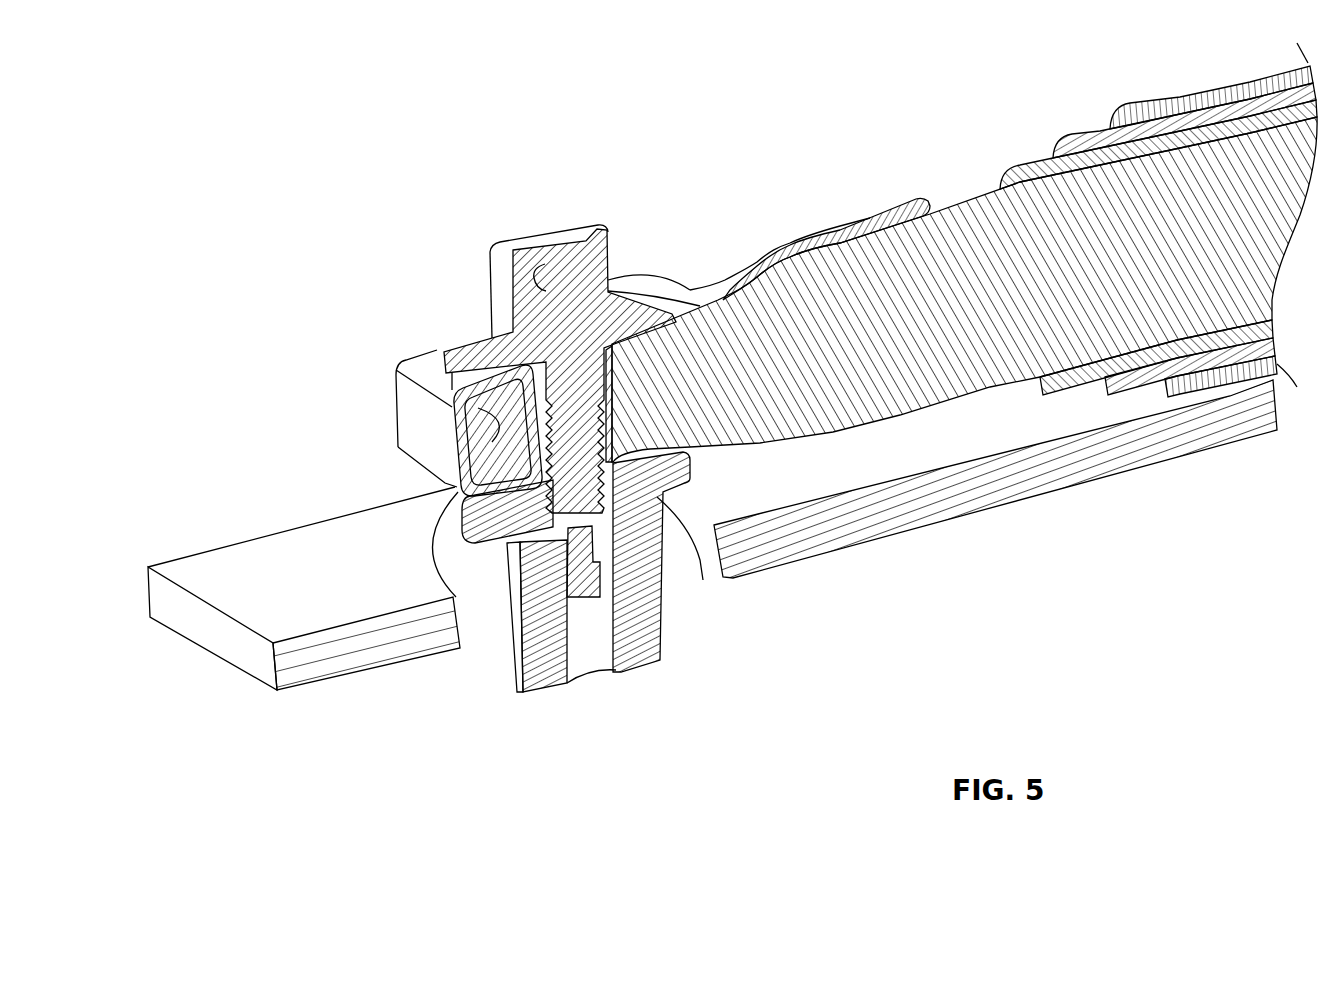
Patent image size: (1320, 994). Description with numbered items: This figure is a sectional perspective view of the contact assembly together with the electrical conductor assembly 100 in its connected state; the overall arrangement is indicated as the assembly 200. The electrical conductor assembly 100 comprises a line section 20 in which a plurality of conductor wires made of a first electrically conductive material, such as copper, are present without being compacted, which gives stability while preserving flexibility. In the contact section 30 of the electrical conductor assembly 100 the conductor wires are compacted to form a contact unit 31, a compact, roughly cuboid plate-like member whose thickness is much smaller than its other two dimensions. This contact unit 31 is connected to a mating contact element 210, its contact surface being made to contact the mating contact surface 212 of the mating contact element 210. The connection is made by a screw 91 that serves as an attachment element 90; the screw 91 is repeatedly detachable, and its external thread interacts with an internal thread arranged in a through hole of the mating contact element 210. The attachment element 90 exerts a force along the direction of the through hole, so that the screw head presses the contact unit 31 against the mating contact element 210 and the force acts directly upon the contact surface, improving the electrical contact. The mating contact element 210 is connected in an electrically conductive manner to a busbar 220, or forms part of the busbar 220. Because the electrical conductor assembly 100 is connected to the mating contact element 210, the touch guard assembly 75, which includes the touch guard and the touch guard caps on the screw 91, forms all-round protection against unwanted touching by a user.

The fastening assembly 200 is at (211, 143).
The electrical conductor assembly 100 is at (529, 214).
The touch guard assembly 75 is at (688, 297).
The attachment element 90 is at (543, 290).
The line section 20 is at (960, 300).
The contact unit 31 is at (452, 407).
The contact section 30 is at (464, 445).
The busbar 220 is at (287, 556).
The mating contact element 210 is at (520, 620).
The mating contact surface 212 is at (684, 456).
The screw 91 is at (601, 515).